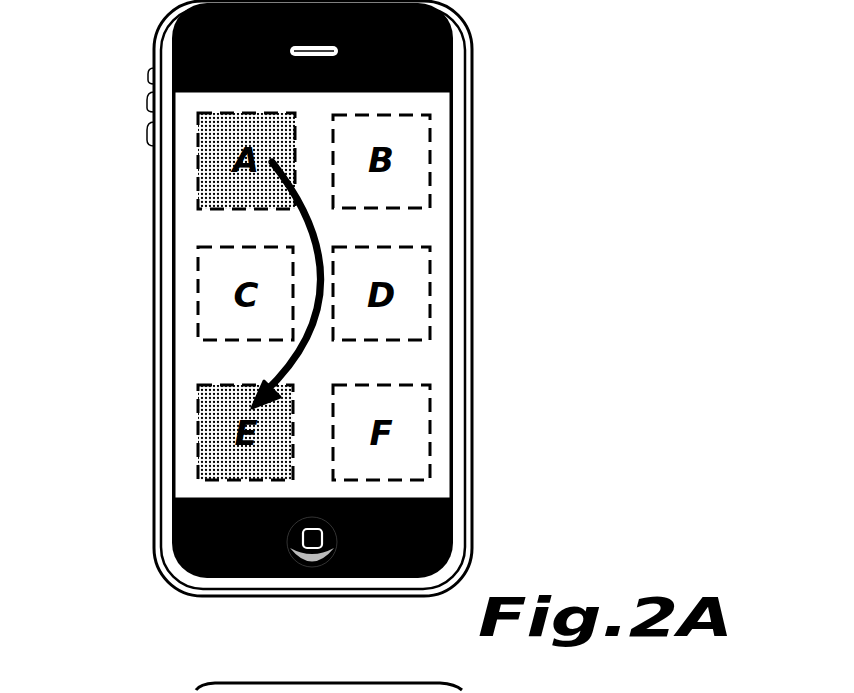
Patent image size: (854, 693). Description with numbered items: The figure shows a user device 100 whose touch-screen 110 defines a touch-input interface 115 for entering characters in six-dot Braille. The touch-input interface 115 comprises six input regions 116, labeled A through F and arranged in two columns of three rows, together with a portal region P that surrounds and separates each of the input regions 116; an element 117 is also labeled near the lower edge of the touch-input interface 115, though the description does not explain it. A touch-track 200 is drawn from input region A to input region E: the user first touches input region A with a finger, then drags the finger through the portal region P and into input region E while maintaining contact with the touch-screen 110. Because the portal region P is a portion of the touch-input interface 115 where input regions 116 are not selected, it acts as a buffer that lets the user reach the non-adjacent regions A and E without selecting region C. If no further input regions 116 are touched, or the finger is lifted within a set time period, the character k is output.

The user device 100 is at (153, 161).
The touch-screen 110 is at (424, 229).
The touch-input interface 115 is at (425, 365).
The input regions 116 is at (414, 284).
The display edge 117 is at (432, 443).
The touch-track 200 is at (288, 361).